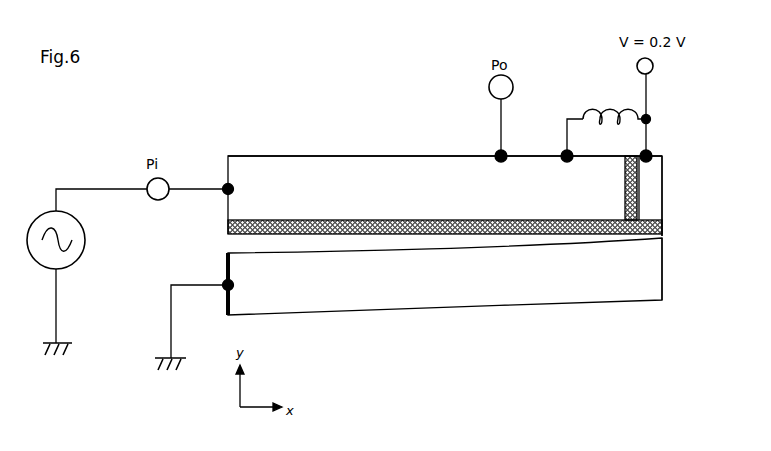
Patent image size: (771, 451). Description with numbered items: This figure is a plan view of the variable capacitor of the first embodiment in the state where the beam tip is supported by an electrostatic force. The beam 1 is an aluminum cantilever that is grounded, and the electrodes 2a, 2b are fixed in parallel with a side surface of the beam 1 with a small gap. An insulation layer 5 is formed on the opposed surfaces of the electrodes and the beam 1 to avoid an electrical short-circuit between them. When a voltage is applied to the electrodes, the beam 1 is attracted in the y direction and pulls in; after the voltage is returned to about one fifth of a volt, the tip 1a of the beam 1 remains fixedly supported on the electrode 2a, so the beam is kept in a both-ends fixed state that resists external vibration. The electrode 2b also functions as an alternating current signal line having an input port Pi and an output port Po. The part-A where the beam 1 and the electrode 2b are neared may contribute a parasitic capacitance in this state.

The beam 1 is at (360, 302).
The tip 1a is at (655, 263).
The electrode 2a is at (651, 191).
The electrode 2b is at (427, 163).
The insulation layer 5 is at (367, 227).
The part- A is at (627, 222).